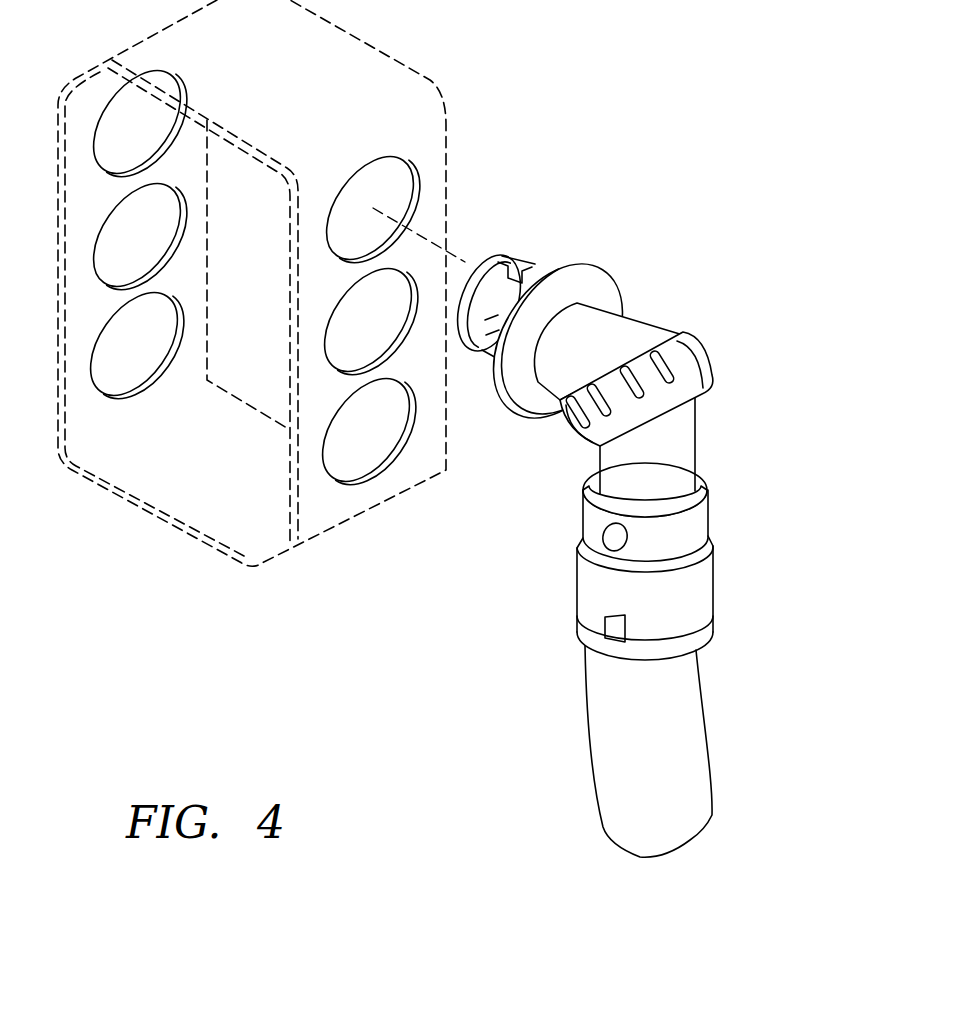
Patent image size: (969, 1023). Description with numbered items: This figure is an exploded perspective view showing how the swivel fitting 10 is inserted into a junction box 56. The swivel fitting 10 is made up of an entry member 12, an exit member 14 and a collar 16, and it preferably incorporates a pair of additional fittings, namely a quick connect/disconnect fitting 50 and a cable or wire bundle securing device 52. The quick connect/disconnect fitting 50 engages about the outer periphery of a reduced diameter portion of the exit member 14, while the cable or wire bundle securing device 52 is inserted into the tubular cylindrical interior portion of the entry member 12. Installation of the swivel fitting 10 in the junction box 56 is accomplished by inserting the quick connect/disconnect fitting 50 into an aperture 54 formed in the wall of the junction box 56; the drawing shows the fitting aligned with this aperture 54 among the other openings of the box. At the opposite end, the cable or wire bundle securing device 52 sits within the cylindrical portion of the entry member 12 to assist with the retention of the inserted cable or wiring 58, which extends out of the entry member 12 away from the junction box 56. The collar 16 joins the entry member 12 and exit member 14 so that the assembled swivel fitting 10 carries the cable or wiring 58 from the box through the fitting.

The swivel fitting 10 is at (659, 532).
The entry member 12 is at (693, 525).
The exit member 14 is at (628, 345).
The collar 16 is at (702, 340).
The quick connect/disconnect fitting 50 is at (542, 263).
The cable or wire bundle securing device 52 is at (605, 618).
The aperture 54 is at (395, 188).
The junction box 56 is at (377, 72).
The cable or wiring 58 is at (595, 693).